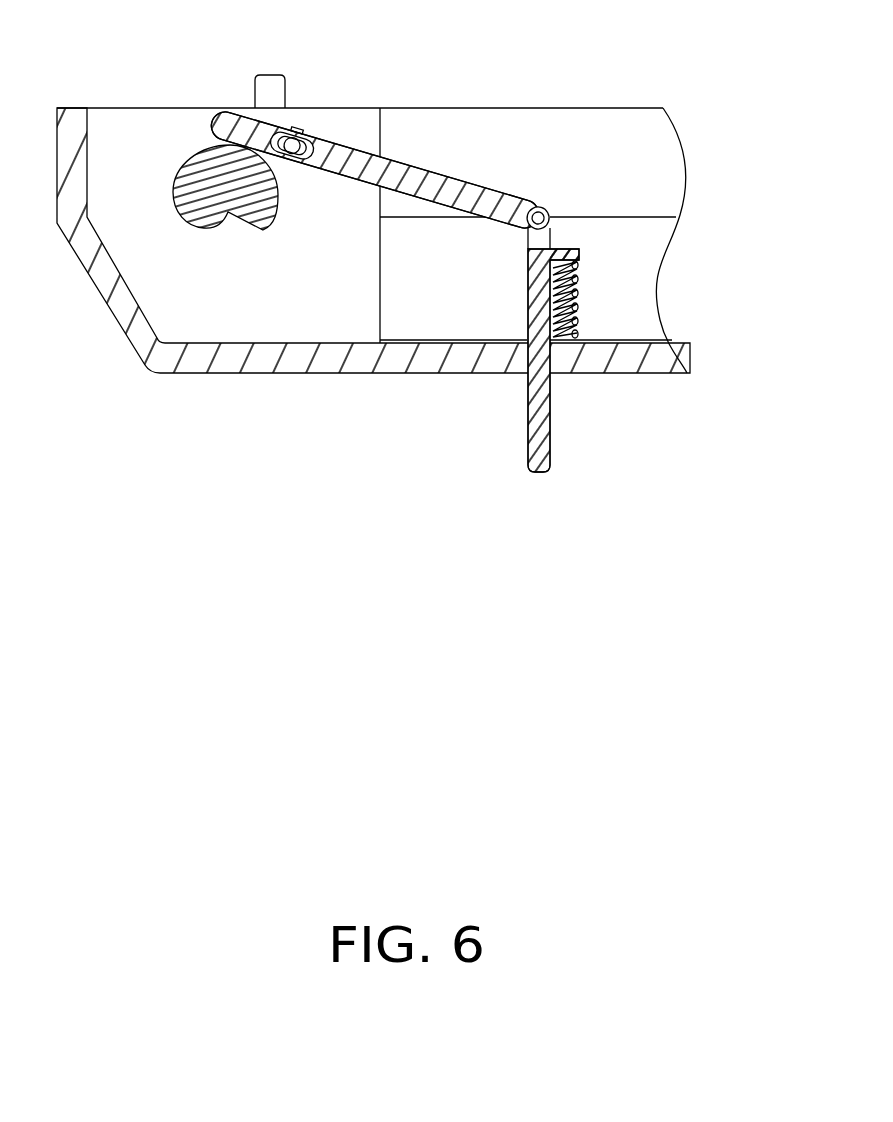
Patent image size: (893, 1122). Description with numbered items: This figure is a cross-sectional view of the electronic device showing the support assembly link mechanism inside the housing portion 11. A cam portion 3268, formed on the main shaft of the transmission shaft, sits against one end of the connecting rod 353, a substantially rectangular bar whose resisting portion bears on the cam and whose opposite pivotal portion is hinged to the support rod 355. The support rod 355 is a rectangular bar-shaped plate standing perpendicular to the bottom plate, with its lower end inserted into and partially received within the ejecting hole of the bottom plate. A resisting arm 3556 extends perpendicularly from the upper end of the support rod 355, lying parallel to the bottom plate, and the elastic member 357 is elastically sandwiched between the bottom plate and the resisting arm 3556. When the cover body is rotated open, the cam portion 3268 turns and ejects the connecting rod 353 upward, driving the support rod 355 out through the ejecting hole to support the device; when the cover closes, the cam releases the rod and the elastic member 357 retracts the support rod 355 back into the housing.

The housing 11 is at (195, 353).
The cam portion 3268 is at (203, 170).
The connecting rod 353 is at (350, 158).
The support rod 355 is at (538, 428).
The resisting arm 3556 is at (575, 250).
The elastic member 357 is at (575, 300).